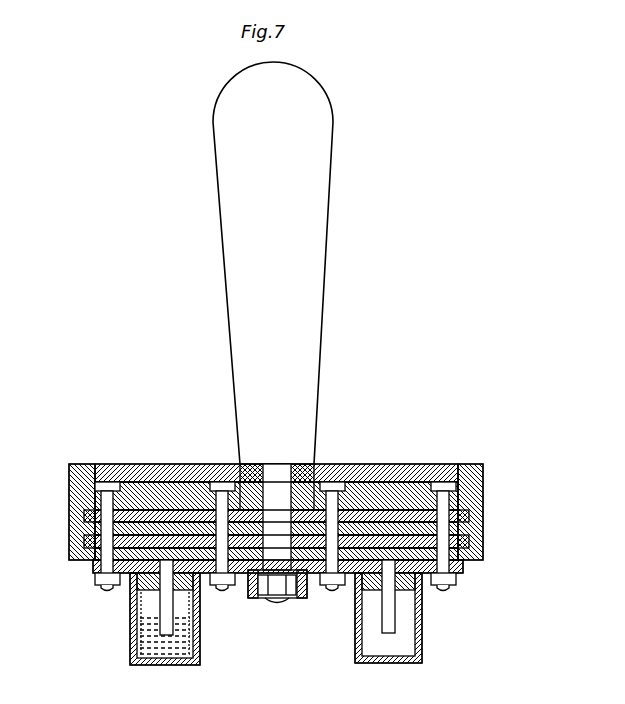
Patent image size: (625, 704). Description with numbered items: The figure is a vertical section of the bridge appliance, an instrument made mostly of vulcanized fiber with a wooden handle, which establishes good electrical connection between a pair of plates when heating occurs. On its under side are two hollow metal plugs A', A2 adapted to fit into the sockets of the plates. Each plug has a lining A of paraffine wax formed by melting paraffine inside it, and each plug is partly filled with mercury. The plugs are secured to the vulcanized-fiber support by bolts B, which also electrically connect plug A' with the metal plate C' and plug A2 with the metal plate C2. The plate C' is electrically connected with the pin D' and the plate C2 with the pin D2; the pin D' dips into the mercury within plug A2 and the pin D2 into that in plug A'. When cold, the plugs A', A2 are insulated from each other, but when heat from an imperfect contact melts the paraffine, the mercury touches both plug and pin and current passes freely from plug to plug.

The bolts B is at (208, 483).
The metal plate C2 is at (88, 518).
The metal plate C' is at (287, 569).
The pin D2 is at (161, 604).
The pin D' is at (391, 606).
The lining A is at (289, 624).
The hollow metal plug A' is at (160, 624).
The hollow metal plug A2 is at (362, 606).